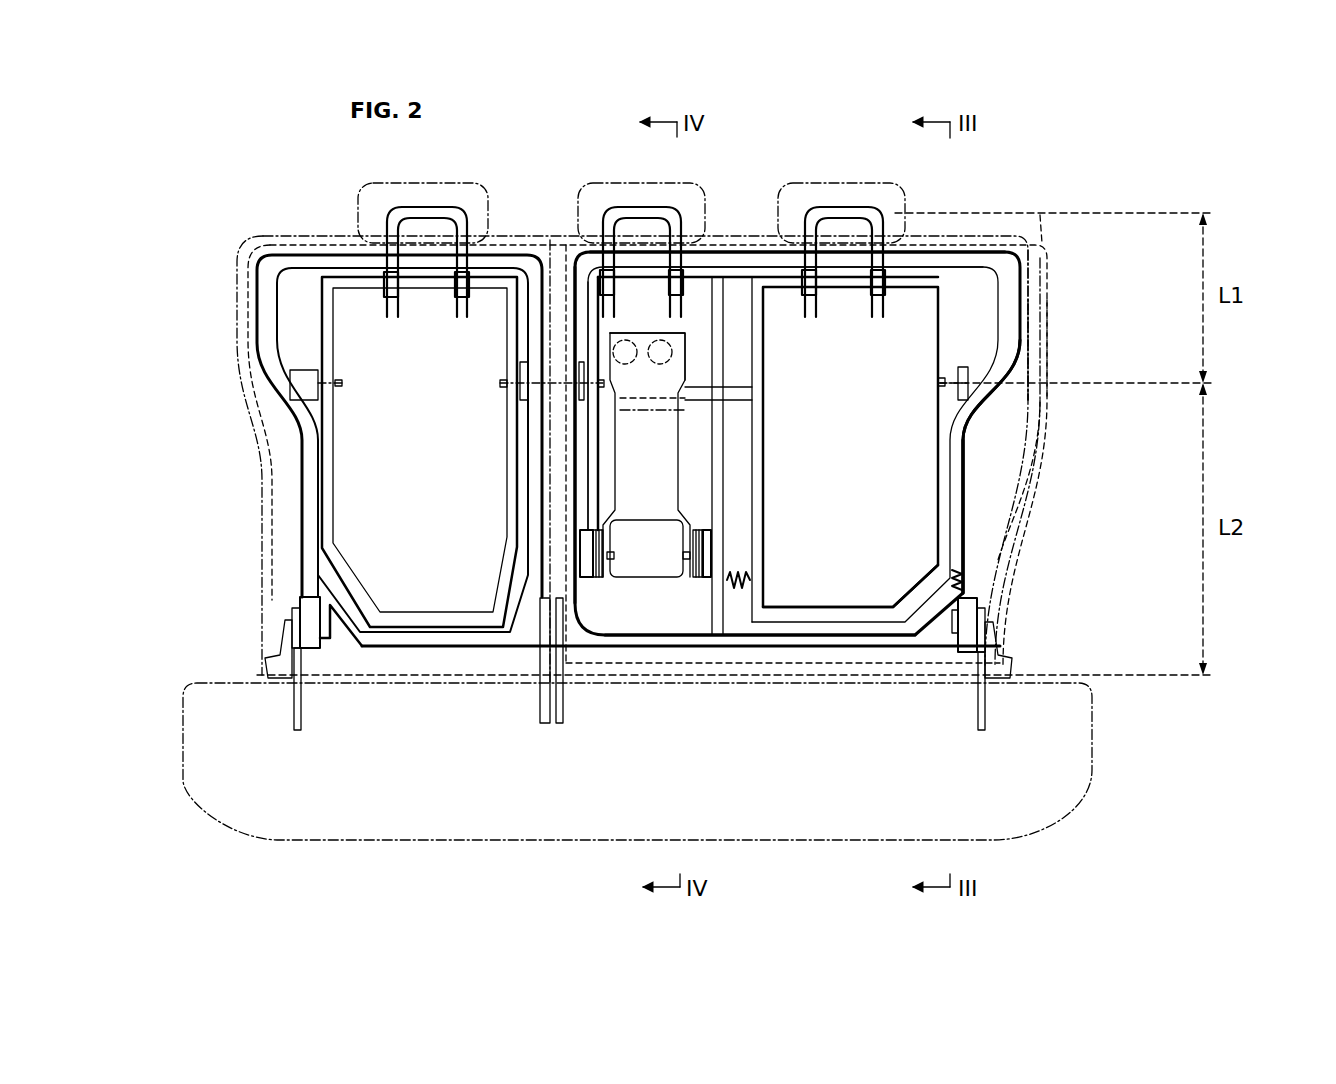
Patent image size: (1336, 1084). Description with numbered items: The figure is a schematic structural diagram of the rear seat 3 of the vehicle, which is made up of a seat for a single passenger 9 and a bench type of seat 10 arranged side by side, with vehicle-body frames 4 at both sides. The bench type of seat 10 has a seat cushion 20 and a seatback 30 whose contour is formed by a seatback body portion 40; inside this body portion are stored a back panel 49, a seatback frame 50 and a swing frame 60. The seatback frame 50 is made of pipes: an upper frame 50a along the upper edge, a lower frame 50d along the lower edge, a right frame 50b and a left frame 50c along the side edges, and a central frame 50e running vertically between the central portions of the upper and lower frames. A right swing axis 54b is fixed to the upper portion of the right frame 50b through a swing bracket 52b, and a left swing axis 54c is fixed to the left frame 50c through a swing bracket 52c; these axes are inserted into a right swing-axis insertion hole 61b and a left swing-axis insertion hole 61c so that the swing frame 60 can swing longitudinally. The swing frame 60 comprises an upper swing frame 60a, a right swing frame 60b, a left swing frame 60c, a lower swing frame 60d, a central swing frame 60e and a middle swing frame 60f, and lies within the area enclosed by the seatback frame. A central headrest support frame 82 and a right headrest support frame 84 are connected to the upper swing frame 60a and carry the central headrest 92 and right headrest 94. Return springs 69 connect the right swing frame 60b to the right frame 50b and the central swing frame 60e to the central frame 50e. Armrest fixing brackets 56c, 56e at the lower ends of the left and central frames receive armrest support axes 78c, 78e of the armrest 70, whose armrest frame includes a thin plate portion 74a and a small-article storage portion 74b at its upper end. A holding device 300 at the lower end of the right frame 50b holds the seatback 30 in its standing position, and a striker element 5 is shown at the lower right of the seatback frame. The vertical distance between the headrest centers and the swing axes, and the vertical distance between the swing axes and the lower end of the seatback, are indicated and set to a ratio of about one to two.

The rear seat 3 is at (1087, 195).
The vehicle-body frame 4 is at (236, 243).
The striker 5 is at (1003, 670).
The seat for a single passenger 9 is at (297, 193).
The bench type of seat 10 is at (768, 502).
The seat cushion 20 is at (1070, 728).
The seatback 30 is at (1043, 350).
The seatback body portion 40 is at (1020, 440).
The back panel 49 is at (1048, 365).
The seatback frame 50 is at (968, 492).
The upper frame 50a is at (983, 252).
The right frame 50b is at (965, 428).
The left frame 50c is at (575, 265).
The lower frame 50d is at (718, 640).
The central frame 50e is at (712, 613).
The swing bracket 52b is at (965, 372).
The swing bracket 52c is at (577, 395).
The right swing axis 54b is at (937, 382).
The left swing axis 54c is at (600, 425).
The armrest fixing bracket 56c is at (583, 578).
The armrest fixing bracket 56e is at (705, 555).
The swing frame 60 is at (950, 520).
The upper swing frame 60a is at (838, 280).
The right swing frame 60b is at (943, 467).
The left swing frame 60c is at (588, 278).
The lower swing frame 60d is at (862, 612).
The central swing frame 60e is at (763, 515).
The middle swing frame 60f is at (750, 390).
The right swing-axis insertion hole 61b is at (938, 378).
The left swing-axis insertion hole 61c is at (578, 360).
The return spring 69 is at (958, 578).
The armrest 70 is at (630, 508).
The plate portion 74a is at (655, 495).
The small-article storage portion 74b is at (687, 330).
The armrest support axis 78c is at (613, 560).
The armrest support axis 78e is at (680, 558).
The central headrest support frame 82 is at (628, 208).
The right headrest support frame 84 is at (823, 210).
The central headrest 92 is at (670, 180).
The right headrest 94 is at (833, 180).
The holding device 300 is at (990, 613).